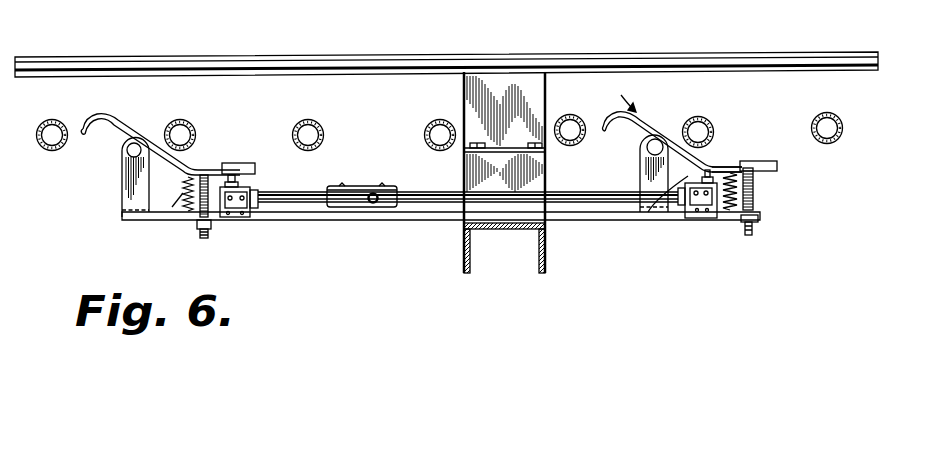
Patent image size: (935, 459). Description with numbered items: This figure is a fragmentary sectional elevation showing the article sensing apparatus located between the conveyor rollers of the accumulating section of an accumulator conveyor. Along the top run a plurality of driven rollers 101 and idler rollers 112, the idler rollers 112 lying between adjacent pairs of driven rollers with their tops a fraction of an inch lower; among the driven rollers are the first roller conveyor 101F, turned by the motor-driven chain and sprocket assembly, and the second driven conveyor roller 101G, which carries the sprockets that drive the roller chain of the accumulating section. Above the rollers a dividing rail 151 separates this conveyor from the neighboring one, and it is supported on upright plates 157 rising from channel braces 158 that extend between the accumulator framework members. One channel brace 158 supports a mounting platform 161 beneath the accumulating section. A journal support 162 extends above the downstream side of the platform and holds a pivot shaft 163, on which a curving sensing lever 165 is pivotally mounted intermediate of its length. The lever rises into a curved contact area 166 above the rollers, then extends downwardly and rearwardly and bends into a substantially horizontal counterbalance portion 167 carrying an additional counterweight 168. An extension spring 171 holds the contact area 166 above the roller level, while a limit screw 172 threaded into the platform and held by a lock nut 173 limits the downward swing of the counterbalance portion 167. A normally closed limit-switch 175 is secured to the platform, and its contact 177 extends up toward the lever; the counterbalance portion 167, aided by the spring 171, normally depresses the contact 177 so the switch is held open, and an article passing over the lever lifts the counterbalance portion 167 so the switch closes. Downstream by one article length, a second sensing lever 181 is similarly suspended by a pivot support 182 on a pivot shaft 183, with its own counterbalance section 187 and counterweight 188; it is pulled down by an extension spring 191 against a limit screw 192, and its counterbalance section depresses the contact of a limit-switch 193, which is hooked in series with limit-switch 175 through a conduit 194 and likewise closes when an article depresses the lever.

The idler roller 112 is at (52, 119).
The driven roller 101 is at (180, 119).
The second driven conveyor roller 101G is at (443, 119).
The first roller conveyor 101F is at (703, 117).
The dividing rail 151 is at (442, 58).
The upright plate 157 is at (507, 80).
The channel brace 158 is at (471, 243).
The mounting platform 161 is at (596, 219).
The journal support 162 is at (648, 172).
The pivot shaft 163 is at (647, 147).
The sensing lever 165 is at (673, 126).
The curved contact area 166 is at (614, 96).
The counterbalance portion 167 is at (719, 167).
The counterweight 168 is at (777, 164).
The extension spring 171 is at (730, 205).
The limit screw 172 is at (757, 192).
The lock nut 173 is at (762, 219).
The limit-switch 175 is at (697, 219).
The contact 177 is at (648, 212).
The second sensing lever 181 is at (109, 118).
The pivot support 182 is at (128, 193).
The pivot shaft 183 is at (132, 155).
The counterbalance section 187 is at (190, 175).
The counterweight 188 is at (244, 163).
The extension spring 191 is at (172, 207).
The limit screw 192 is at (200, 198).
The limit-switch 193 is at (252, 186).
The conduit 194 is at (396, 208).